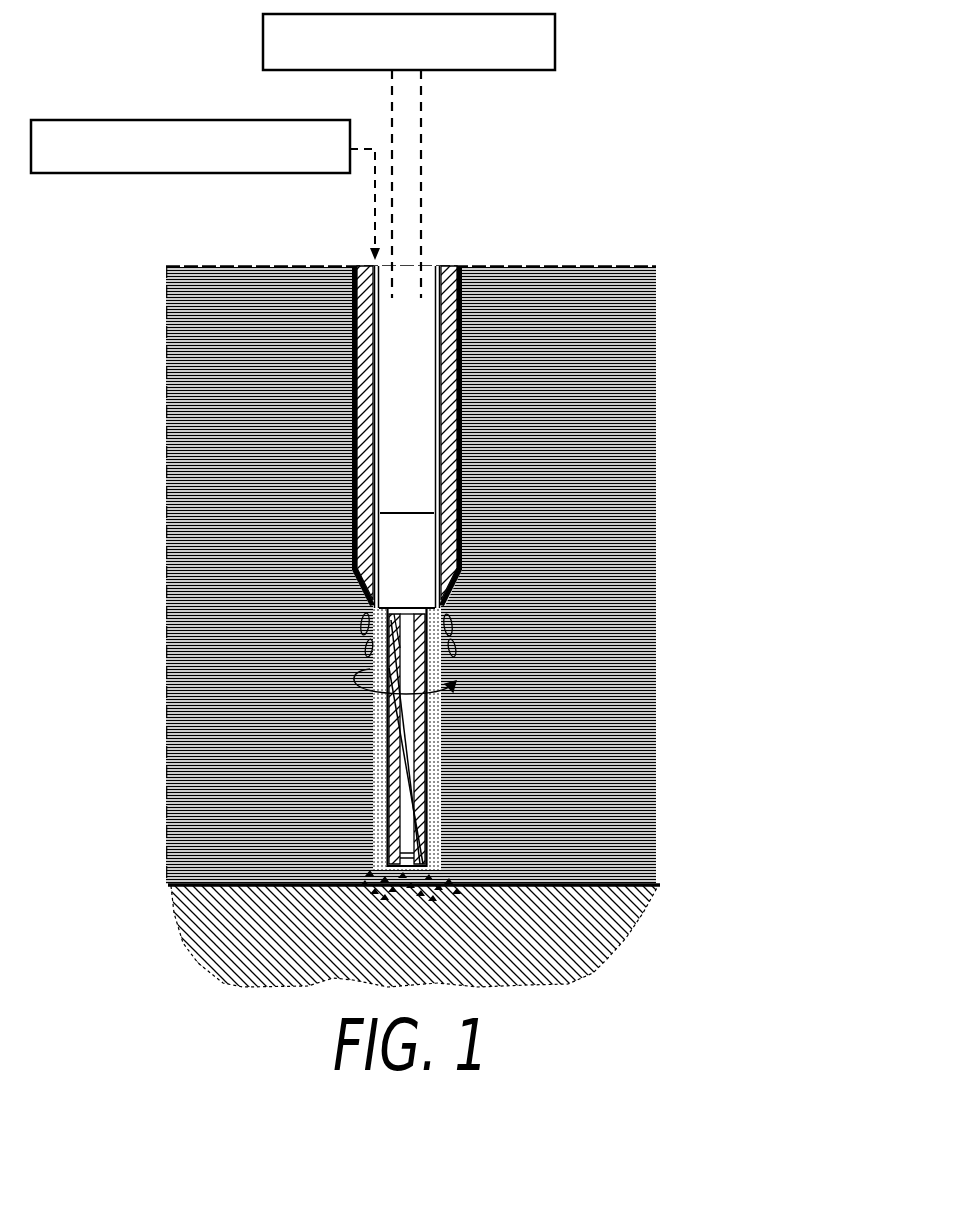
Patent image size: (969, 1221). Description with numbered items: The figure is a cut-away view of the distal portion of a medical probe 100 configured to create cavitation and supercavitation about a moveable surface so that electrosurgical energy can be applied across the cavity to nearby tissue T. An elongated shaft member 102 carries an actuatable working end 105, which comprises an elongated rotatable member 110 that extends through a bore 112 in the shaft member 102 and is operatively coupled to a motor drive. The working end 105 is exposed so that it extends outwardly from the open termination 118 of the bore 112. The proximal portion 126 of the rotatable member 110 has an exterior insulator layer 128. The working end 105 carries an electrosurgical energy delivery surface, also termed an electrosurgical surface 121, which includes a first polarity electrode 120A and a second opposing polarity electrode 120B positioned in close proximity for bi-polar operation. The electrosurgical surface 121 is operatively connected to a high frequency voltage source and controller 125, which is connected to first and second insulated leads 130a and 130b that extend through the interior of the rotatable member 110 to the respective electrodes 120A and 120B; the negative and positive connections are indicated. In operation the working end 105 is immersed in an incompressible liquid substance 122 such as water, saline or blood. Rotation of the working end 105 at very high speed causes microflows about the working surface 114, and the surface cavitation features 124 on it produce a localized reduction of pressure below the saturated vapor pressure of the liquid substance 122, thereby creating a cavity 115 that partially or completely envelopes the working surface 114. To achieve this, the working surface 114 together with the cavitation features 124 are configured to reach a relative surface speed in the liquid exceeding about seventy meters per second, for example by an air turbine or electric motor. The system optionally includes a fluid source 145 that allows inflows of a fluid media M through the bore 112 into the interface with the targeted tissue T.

The medical probe 100 is at (672, 186).
The shaft member 102 is at (452, 287).
The working end 105 is at (437, 620).
The rotatable member 110 is at (398, 607).
The bore 112 is at (453, 330).
The working surface 114 is at (395, 718).
The cavity 115 is at (408, 790).
The open termination 118 is at (360, 647).
The first polarity electrode 120A is at (388, 826).
The second opposing polarity electrode 120B is at (415, 818).
The electrosurgical surface 121 is at (425, 805).
The liquid substance 122 is at (450, 653).
The cavitation features 124 is at (395, 750).
The voltage source 125 is at (409, 58).
The proximal portion 126 is at (380, 470).
The exterior insulator layer 128 is at (410, 440).
The first insulated lead 130a is at (413, 229).
The second insulated lead 130b is at (388, 209).
The fluid source 145 is at (205, 190).
The fluid media M is at (355, 615).
The tissue T is at (632, 897).